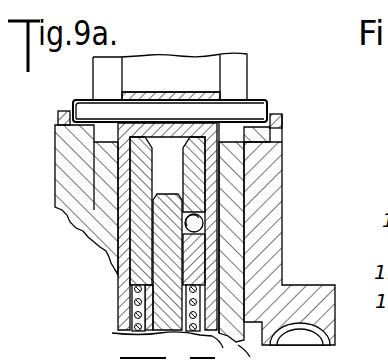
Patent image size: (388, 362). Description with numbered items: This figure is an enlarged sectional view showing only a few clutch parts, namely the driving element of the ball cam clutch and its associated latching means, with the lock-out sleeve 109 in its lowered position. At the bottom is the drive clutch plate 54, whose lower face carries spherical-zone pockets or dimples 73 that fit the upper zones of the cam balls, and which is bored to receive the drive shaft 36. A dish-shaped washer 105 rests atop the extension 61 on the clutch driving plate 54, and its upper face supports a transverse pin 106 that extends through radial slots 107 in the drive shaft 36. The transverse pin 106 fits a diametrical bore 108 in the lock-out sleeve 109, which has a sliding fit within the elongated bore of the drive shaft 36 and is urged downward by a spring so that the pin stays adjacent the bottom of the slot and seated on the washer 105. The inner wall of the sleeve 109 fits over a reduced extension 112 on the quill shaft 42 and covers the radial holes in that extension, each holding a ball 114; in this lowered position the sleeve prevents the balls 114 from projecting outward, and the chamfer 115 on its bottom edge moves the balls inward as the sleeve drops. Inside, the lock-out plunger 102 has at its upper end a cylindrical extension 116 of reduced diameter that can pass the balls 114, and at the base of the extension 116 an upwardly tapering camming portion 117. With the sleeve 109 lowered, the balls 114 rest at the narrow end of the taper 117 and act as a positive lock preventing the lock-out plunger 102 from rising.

The radial slots 107 is at (227, 64).
The diametrical bore 108 is at (130, 103).
The transverse pin 106 is at (253, 100).
The dish-shaped washer 105 is at (280, 128).
The reduced extension 112 is at (120, 176).
The lock-out sleeve 109 is at (212, 172).
The cylindrical extension 116 is at (130, 241).
The tapering or camming portion 117 is at (145, 268).
The chamfer 115 is at (206, 262).
The ball 114 is at (204, 227).
The extension 61 is at (289, 189).
The quill shaft 42 is at (128, 307).
The lock-out plunger 102 is at (152, 327).
The drive clutch plate 54 is at (328, 326).
The pockets or dimples 73 is at (318, 343).
The drive shaft 36 is at (250, 357).